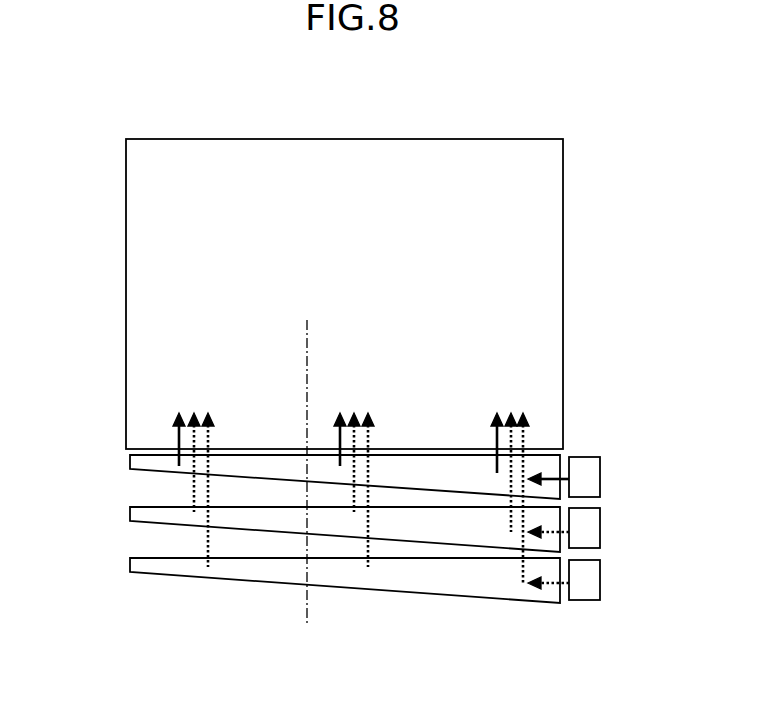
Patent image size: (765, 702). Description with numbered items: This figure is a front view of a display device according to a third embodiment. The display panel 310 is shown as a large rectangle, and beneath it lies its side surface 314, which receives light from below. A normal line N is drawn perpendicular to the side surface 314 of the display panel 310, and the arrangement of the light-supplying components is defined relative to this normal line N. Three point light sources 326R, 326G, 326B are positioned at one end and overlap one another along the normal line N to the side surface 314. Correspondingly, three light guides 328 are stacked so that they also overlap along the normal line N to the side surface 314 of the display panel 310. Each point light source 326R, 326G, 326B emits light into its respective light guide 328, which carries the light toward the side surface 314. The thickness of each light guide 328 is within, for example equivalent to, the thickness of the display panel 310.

The display panel 310 is at (556, 301).
The side surface 314 is at (401, 449).
The light guide 328 is at (130, 461).
The point light source 326R is at (600, 480).
The point light source 326G is at (600, 530).
The point light source 326B is at (600, 580).
The normal line N is at (309, 617).